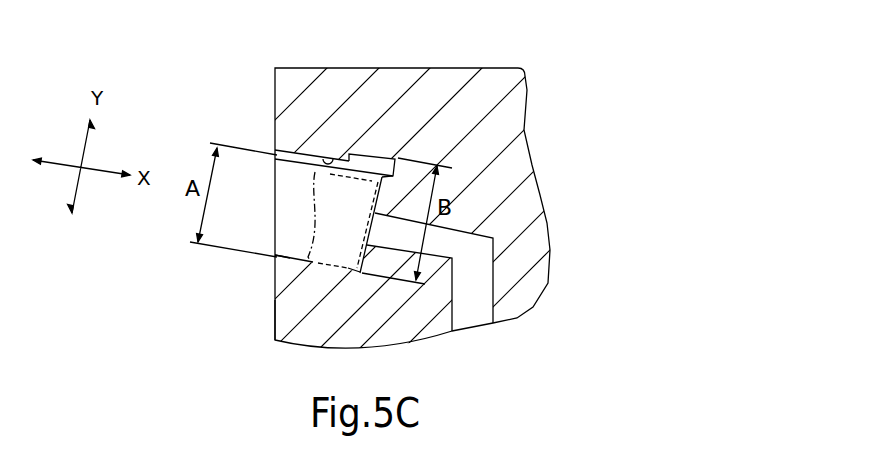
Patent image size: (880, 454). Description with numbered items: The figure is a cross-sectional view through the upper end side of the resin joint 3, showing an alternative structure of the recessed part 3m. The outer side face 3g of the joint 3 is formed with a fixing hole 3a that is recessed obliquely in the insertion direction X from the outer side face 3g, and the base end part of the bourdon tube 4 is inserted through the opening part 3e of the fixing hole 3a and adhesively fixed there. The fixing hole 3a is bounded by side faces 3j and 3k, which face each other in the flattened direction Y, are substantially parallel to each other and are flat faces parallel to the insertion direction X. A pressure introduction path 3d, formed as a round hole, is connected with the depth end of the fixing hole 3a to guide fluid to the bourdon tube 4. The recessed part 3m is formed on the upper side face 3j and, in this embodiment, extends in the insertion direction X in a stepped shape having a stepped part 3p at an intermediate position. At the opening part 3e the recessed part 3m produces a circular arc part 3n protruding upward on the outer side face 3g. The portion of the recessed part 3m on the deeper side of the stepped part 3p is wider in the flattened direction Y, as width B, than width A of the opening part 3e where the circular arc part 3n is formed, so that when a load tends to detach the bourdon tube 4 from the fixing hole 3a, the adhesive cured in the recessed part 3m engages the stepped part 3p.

The joint 3 is at (456, 68).
The fixing hole 3a is at (296, 214).
The pressure introduction path 3d is at (483, 291).
The opening part 3e is at (274, 258).
The outer side face 3g is at (274, 324).
The side face 3j is at (333, 169).
The side face 3k is at (342, 267).
The recessed part 3m is at (335, 157).
The circular arc part 3n is at (274, 150).
The stepped part 3p is at (352, 153).
The bourdon tube 4 is at (311, 262).